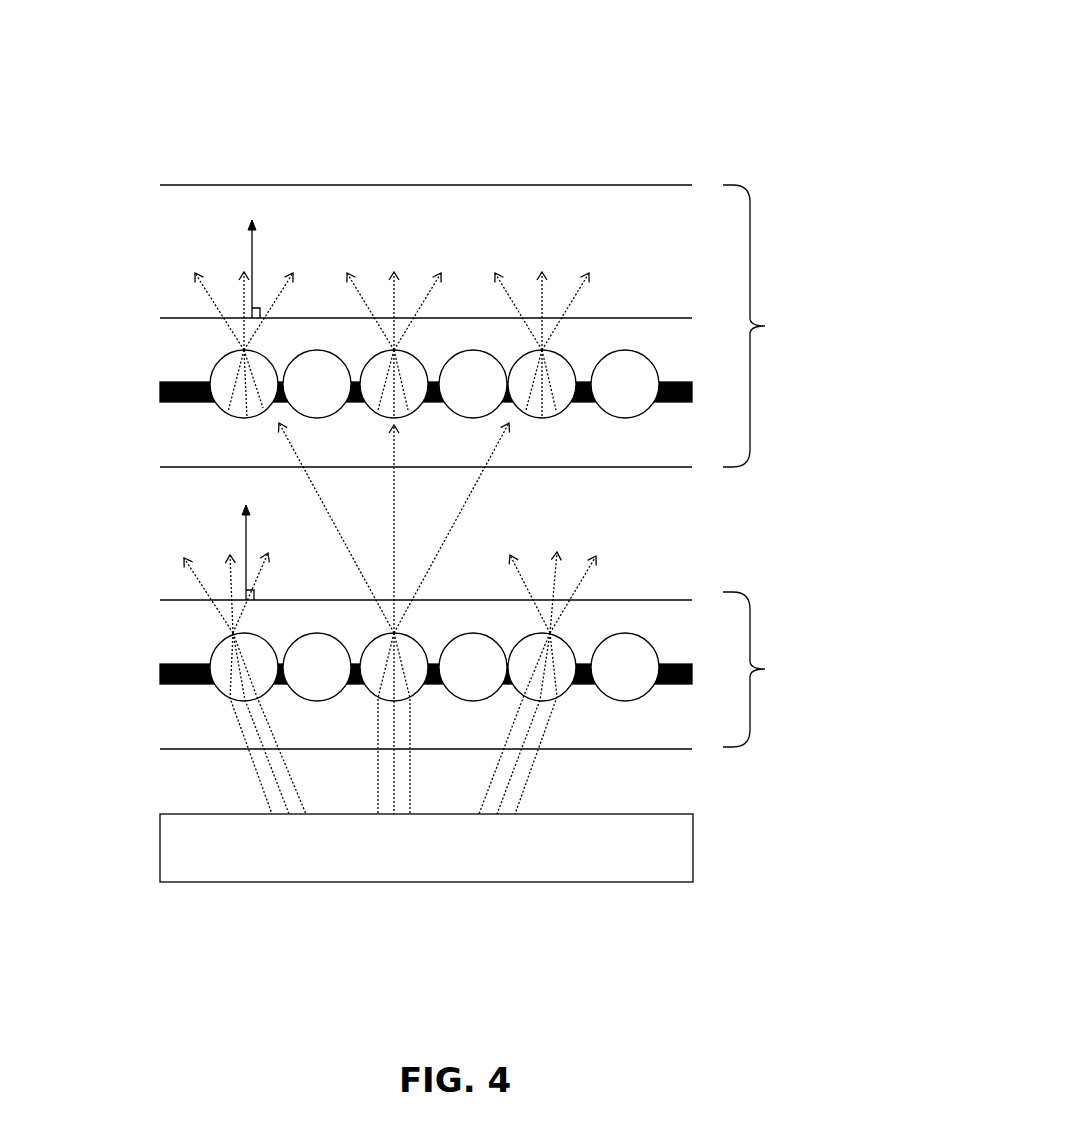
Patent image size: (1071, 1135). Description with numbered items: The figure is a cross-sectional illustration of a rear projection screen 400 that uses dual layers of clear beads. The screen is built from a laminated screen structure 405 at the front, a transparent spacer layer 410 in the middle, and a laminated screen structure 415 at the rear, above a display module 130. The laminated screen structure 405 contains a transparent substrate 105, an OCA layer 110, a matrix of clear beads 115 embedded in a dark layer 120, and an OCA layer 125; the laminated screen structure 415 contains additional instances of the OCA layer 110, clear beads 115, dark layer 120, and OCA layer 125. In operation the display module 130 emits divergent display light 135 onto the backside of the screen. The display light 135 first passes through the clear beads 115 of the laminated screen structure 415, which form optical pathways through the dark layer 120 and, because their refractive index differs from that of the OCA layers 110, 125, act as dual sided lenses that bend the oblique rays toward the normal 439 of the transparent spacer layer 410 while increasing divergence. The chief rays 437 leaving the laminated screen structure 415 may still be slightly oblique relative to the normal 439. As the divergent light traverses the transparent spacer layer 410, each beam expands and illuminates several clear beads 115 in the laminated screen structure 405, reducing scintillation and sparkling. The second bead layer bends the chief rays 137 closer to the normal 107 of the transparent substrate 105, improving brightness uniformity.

The rear projection screen 400 is at (737, 64).
The transparent substrate 105 is at (426, 217).
The OCA layer 110 is at (426, 474).
The clear beads 115 is at (434, 525).
The dark layer 120 is at (160, 392).
The OCA layer 125 is at (426, 592).
The display module 130 is at (426, 848).
The display light 135 is at (253, 773).
The normal 107 is at (252, 242).
The chief rays 137 is at (239, 283).
The laminated screen structure 405 is at (797, 326).
The transparent spacer layer 410 is at (609, 518).
The laminated screen structure 415 is at (797, 669).
The chief rays 437 is at (230, 569).
The normal 439 is at (246, 530).